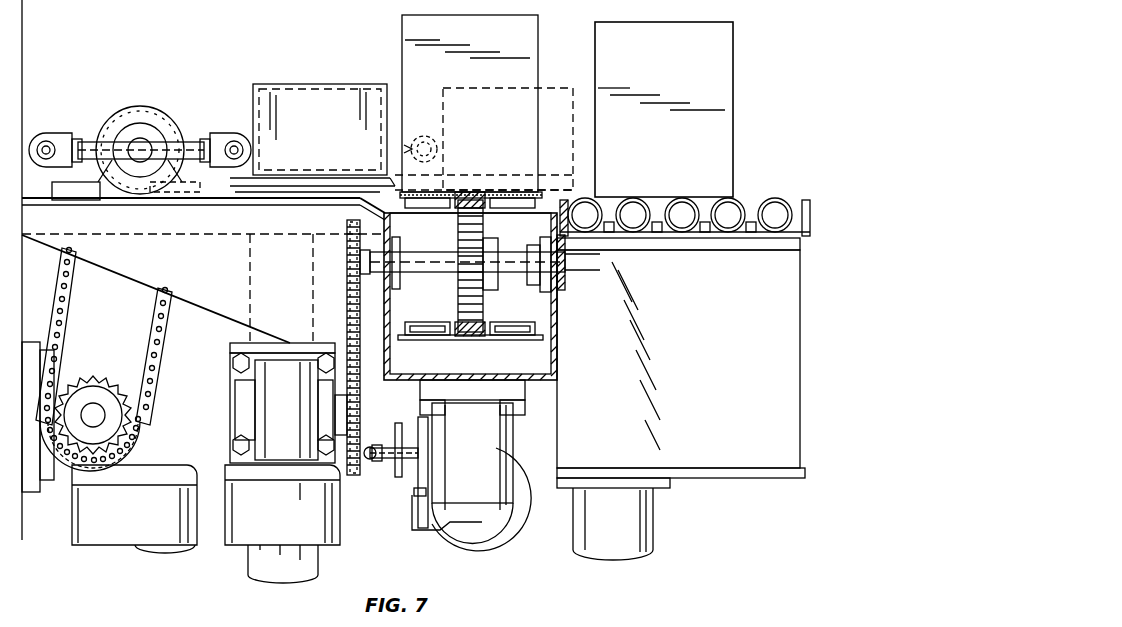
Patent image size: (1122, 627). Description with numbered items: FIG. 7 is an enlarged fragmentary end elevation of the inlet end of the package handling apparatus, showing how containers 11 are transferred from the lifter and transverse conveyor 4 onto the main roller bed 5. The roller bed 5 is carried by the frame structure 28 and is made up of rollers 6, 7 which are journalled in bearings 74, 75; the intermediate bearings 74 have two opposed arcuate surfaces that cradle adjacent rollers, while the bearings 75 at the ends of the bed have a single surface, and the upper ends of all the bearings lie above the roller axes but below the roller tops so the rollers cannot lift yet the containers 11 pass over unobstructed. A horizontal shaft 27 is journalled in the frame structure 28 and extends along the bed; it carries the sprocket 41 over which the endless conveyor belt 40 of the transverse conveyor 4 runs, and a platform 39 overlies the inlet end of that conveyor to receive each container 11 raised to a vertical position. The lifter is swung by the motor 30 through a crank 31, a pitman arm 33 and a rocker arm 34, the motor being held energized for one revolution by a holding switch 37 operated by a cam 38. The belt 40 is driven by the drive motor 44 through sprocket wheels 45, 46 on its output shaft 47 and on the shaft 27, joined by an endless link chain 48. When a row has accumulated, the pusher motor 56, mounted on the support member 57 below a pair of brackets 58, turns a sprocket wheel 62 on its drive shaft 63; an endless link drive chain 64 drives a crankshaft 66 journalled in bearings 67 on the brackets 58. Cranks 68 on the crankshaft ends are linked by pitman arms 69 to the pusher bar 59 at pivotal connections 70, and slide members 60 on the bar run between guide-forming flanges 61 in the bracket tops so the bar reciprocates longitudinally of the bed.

The transverse conveyor 4 is at (500, 342).
The main roller bed 5 is at (692, 196).
The roller 6 is at (603, 200).
The roller 7 is at (645, 200).
The container 11 is at (490, 46).
The shaft 27 is at (433, 280).
The frame structure 28 is at (548, 385).
The motor 30 is at (500, 525).
The crank 31 is at (400, 475).
The pitman arm 33 is at (396, 464).
The rocker arm 34 is at (376, 460).
The holding switch 37 is at (414, 515).
The cam 38 is at (420, 426).
The platform 39 is at (505, 192).
The endless conveyor belt 40 is at (445, 198).
The sprocket 41 is at (460, 292).
The drive motor 44 is at (292, 527).
The sprocket wheel 45 is at (322, 488).
The sprocket wheel 46 is at (347, 270).
The output shaft 47 is at (318, 413).
The endless link chain 48 is at (347, 316).
The pusher motor 56 is at (134, 527).
The support member 57 is at (22, 530).
The bracket 58 is at (205, 303).
The pusher bar 59 is at (313, 84).
The slide member 60 is at (322, 186).
The guide-forming flange 61 is at (286, 196).
The sprocket wheel 62 is at (118, 375).
The drive shaft 63 is at (93, 412).
The endless link drive chain 64 is at (160, 310).
The crankshaft 66 is at (143, 135).
The bearing 67 is at (128, 108).
The crank 68 is at (92, 140).
The pitman arm 69 is at (185, 132).
The pivotal connection 70 is at (230, 137).
The bearing 74 is at (668, 205).
The bearing 75 is at (566, 200).